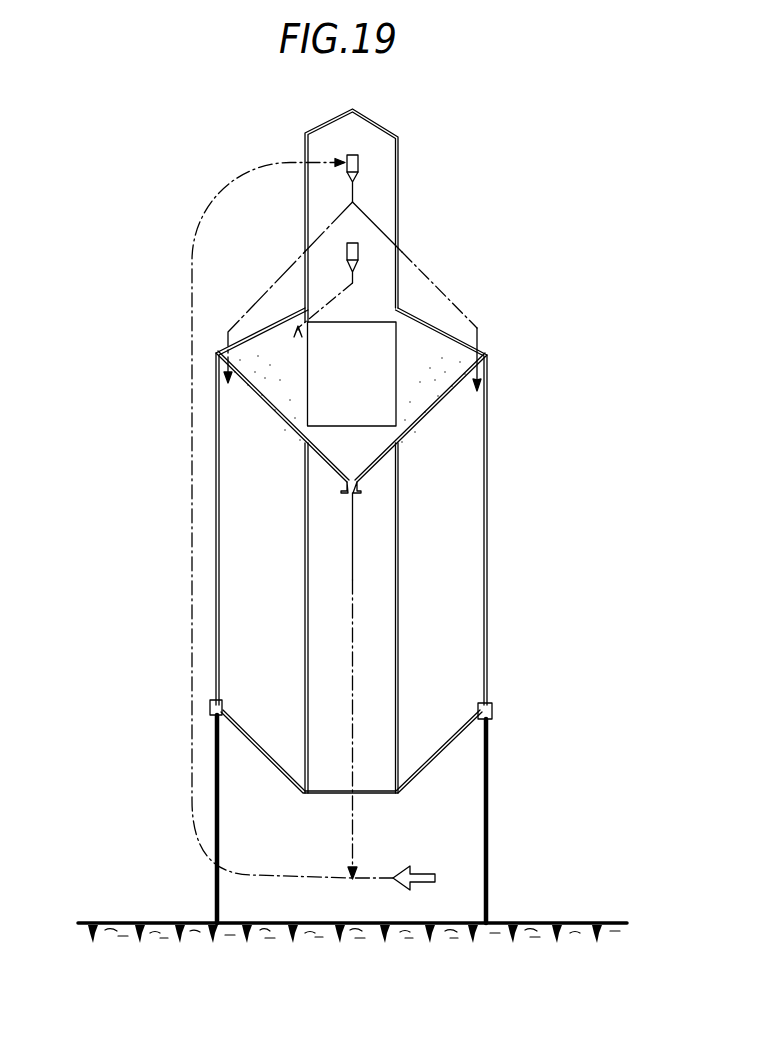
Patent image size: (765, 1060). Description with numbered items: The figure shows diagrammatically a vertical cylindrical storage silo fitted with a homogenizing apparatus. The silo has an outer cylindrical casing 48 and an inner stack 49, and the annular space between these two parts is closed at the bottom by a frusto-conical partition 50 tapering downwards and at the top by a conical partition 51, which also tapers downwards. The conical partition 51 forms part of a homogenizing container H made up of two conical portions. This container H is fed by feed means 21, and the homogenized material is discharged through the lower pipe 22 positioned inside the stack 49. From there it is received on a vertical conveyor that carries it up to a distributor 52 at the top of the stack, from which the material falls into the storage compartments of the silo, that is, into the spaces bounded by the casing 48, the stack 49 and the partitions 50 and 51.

The feed means 21 is at (340, 288).
The lower pipe 22 is at (363, 490).
The outer cylindrical casing 48 is at (487, 557).
The inner stack 49 is at (398, 678).
The frusto-conical partition 50 is at (453, 743).
The conical partition 51 is at (433, 410).
The distributor 52 is at (358, 162).
The homogenizing container H is at (443, 332).